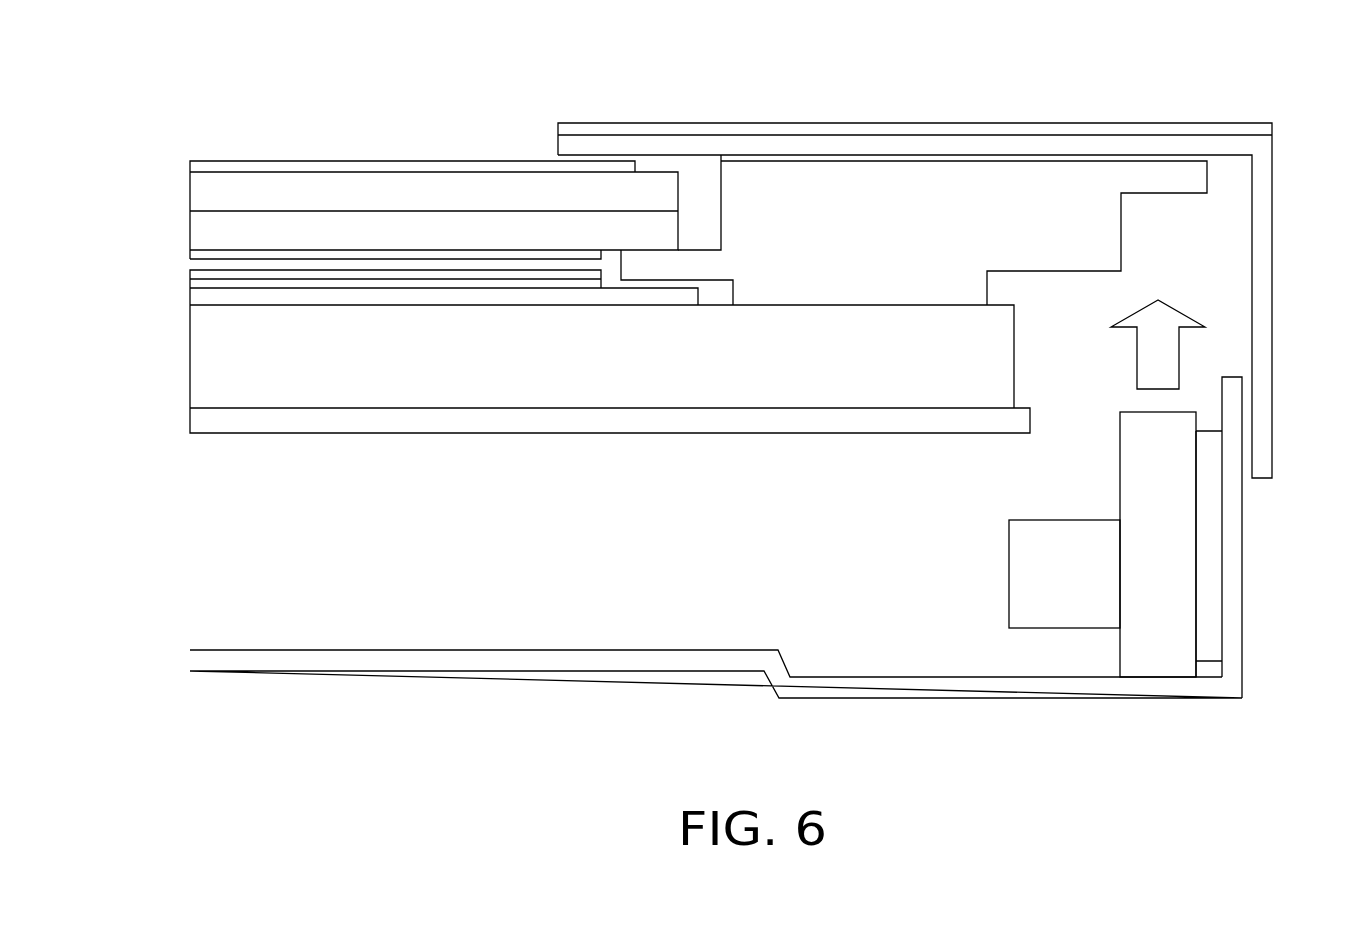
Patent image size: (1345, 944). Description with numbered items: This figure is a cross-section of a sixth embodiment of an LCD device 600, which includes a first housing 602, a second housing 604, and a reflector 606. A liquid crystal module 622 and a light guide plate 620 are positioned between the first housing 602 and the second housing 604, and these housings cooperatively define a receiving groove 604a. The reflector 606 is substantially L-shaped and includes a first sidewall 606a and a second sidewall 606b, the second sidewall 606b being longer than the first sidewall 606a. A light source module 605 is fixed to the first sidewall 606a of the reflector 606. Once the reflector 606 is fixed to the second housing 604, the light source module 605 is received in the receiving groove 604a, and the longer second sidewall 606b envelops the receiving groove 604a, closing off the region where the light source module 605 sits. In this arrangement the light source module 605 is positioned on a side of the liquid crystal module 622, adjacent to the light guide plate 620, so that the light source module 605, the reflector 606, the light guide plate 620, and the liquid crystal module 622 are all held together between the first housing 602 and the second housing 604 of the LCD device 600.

The LCD device 600 is at (1149, 70).
The first housing 602 is at (1070, 128).
The second housing 604 is at (488, 422).
The receiving groove 604a is at (1097, 411).
The light source module 605 is at (1062, 614).
The reflector 606 is at (1220, 712).
The first sidewall 606a is at (1230, 565).
The second sidewall 606b is at (914, 687).
The light guide plate 620 is at (198, 359).
The liquid crystal module 622 is at (328, 135).